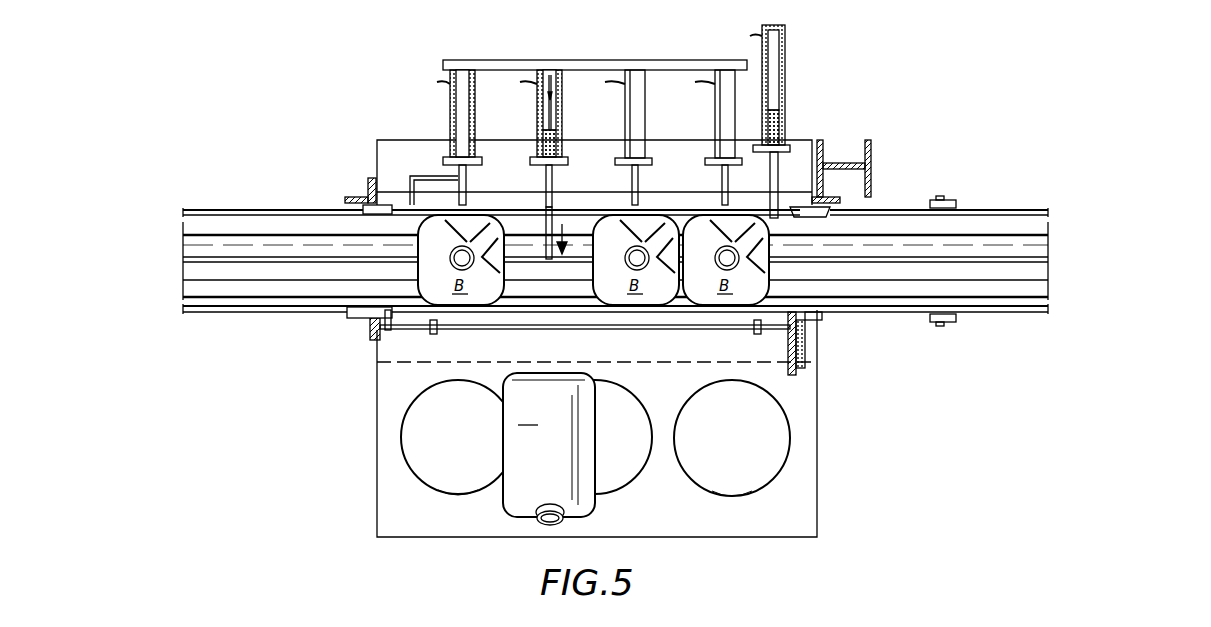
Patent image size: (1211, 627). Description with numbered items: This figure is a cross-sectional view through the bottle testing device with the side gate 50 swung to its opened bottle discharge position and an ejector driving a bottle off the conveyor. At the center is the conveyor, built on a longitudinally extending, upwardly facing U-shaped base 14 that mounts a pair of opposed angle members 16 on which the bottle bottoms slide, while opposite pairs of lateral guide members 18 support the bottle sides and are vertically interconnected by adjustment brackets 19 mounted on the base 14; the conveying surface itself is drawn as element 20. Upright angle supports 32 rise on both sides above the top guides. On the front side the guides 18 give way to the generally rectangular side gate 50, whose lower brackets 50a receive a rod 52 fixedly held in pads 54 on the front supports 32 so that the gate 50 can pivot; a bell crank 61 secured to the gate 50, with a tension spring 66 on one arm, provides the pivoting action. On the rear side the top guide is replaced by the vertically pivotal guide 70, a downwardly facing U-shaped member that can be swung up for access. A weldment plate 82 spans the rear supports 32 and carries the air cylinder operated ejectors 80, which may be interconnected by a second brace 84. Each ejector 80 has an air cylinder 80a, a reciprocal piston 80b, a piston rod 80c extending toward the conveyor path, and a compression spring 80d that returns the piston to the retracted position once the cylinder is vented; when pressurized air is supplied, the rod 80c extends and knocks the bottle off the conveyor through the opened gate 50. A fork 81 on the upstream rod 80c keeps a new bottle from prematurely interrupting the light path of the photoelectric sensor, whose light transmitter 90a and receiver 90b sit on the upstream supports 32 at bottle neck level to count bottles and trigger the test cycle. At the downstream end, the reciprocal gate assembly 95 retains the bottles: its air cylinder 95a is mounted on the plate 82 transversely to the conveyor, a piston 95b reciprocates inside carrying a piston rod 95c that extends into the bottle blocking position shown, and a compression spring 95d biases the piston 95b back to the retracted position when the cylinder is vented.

The base 14 is at (1035, 240).
The angle members 16 is at (215, 222).
The lateral guide members 18 is at (262, 212).
The adjustment brackets 19 is at (950, 204).
The conveyor chain 20 is at (190, 265).
The angle supports 32 is at (370, 178).
The side gate 50 is at (665, 507).
The brackets 50a is at (438, 334).
The rod 52 is at (652, 330).
The pads 54 is at (370, 340).
The bell crank 61 is at (798, 368).
The tension spring 66 is at (805, 352).
The vertically pivotal guide 70 is at (580, 212).
The ejectors 80 is at (438, 95).
The air cylinder 80a is at (543, 92).
The piston 80b is at (470, 82).
The piston rod 80c is at (546, 170).
The compression spring 80d is at (545, 115).
The fork 81 is at (412, 176).
The weldment plate 82 is at (377, 142).
The second brace 84 is at (605, 52).
The light transmitter 90a is at (365, 208).
The receiver 90b is at (355, 318).
The reciprocal gate assembly 95 is at (800, 80).
The air cylinder 95a is at (785, 50).
The piston 95b is at (785, 110).
The piston rod 95c is at (802, 160).
The compression spring 95d is at (786, 132).